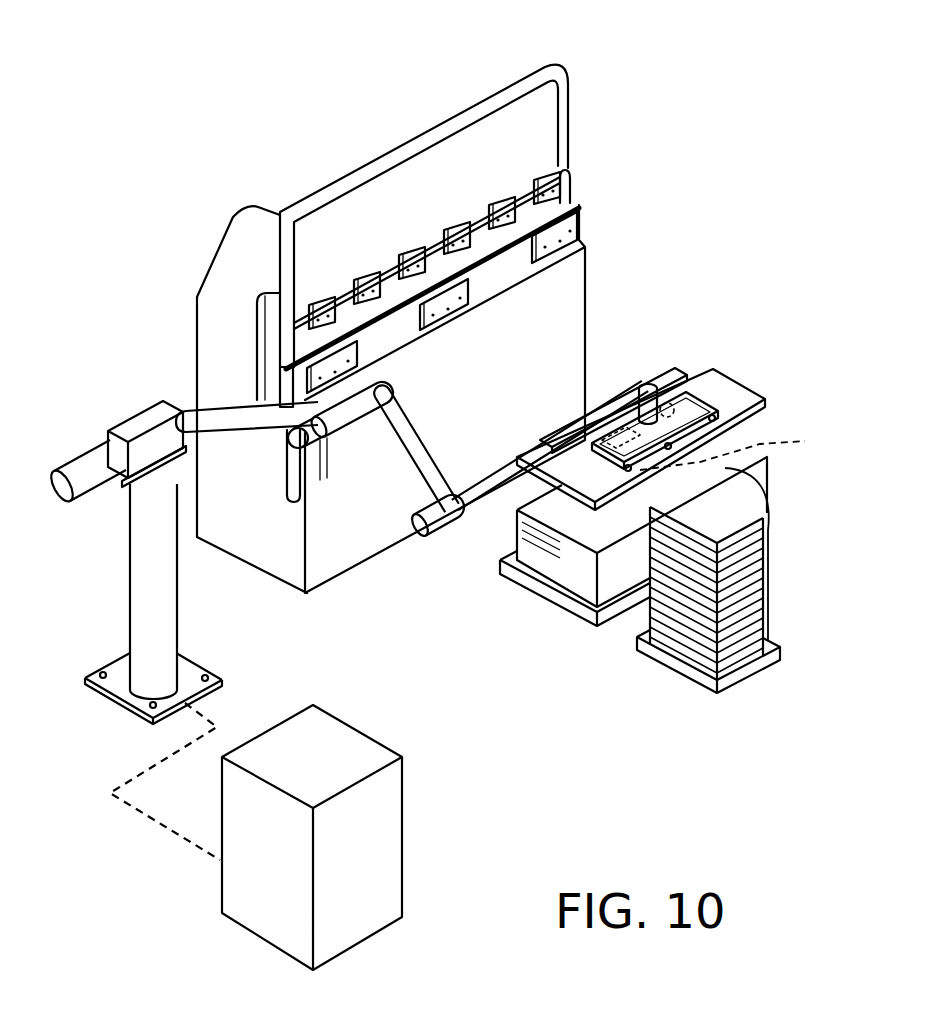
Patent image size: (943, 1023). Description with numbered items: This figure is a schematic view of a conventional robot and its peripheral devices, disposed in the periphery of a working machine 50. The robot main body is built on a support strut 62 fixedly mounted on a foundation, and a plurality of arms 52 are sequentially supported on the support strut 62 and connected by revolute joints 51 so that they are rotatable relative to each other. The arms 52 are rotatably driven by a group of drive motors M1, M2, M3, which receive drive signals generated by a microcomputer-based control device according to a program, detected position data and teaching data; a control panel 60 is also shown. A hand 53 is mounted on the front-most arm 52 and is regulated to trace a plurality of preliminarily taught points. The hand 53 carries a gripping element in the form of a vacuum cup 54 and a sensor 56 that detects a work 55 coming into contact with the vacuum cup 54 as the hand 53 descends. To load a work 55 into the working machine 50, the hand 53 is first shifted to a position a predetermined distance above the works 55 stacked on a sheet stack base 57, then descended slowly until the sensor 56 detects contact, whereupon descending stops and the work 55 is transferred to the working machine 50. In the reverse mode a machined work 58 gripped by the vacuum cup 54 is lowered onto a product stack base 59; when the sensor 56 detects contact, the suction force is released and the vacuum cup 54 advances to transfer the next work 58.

The working machine 50 is at (477, 92).
The revolute joint 51 is at (182, 408).
The arm 52 is at (247, 418).
The hand 53 is at (673, 397).
The vacuum cup 54 is at (720, 420).
The work 55 is at (750, 397).
The sensor 56 is at (805, 444).
The sheet stack base 57 is at (577, 587).
The work 58 is at (690, 645).
The product stack base 59 is at (748, 682).
The control panel 60 is at (380, 818).
The support strut 62 is at (150, 578).
The motor M1 is at (85, 465).
The motor M2 is at (297, 455).
The motor M3 is at (432, 540).